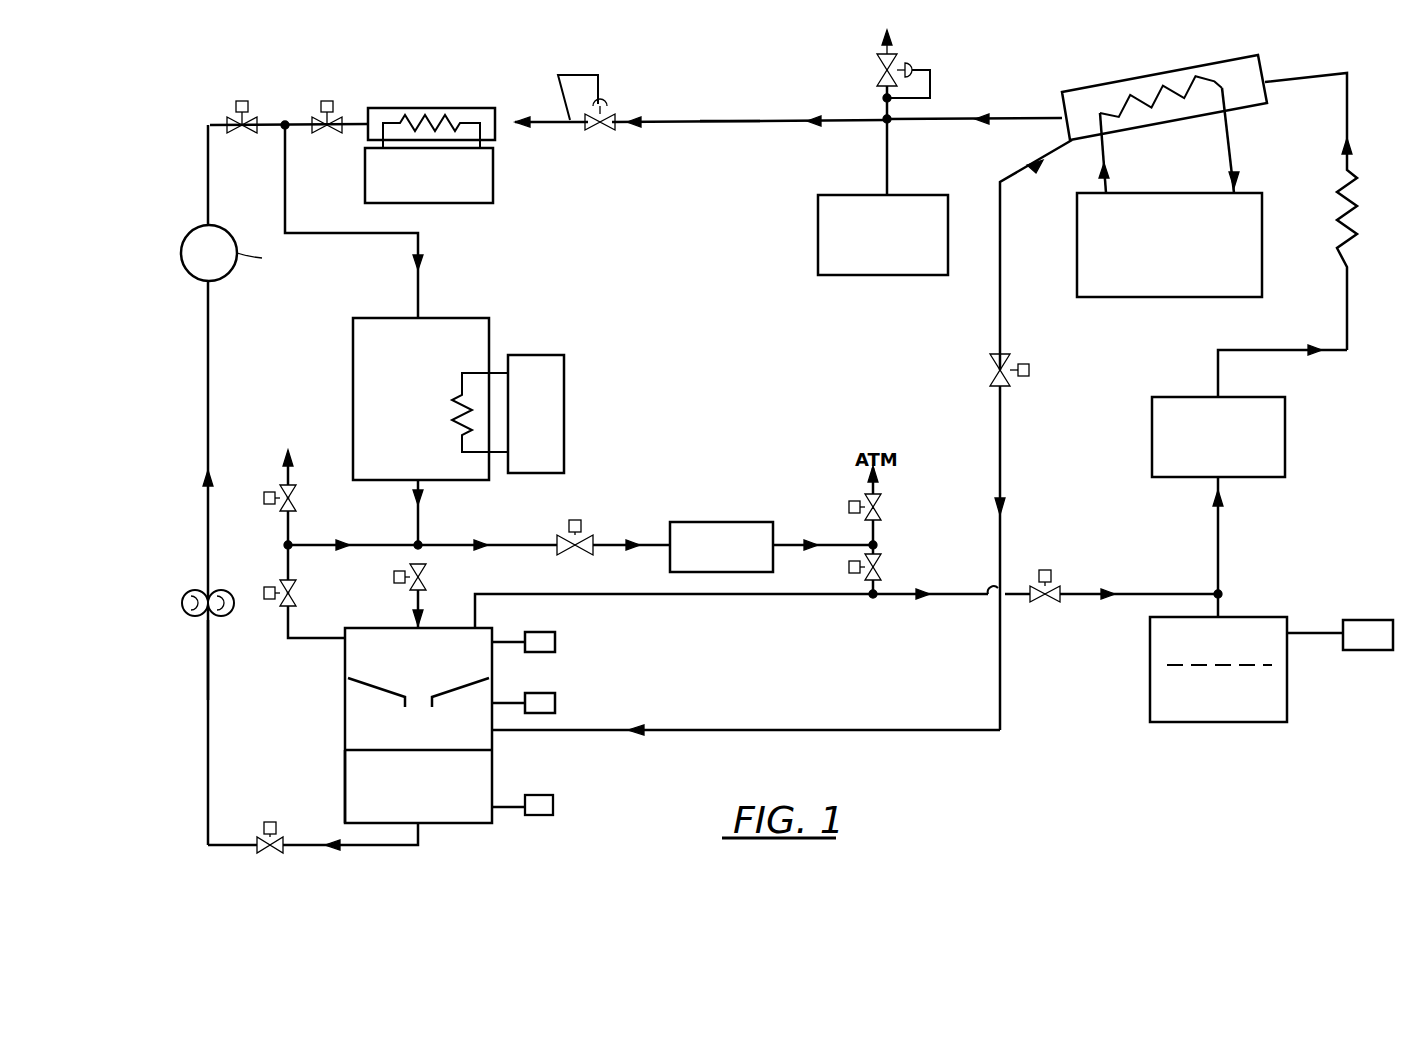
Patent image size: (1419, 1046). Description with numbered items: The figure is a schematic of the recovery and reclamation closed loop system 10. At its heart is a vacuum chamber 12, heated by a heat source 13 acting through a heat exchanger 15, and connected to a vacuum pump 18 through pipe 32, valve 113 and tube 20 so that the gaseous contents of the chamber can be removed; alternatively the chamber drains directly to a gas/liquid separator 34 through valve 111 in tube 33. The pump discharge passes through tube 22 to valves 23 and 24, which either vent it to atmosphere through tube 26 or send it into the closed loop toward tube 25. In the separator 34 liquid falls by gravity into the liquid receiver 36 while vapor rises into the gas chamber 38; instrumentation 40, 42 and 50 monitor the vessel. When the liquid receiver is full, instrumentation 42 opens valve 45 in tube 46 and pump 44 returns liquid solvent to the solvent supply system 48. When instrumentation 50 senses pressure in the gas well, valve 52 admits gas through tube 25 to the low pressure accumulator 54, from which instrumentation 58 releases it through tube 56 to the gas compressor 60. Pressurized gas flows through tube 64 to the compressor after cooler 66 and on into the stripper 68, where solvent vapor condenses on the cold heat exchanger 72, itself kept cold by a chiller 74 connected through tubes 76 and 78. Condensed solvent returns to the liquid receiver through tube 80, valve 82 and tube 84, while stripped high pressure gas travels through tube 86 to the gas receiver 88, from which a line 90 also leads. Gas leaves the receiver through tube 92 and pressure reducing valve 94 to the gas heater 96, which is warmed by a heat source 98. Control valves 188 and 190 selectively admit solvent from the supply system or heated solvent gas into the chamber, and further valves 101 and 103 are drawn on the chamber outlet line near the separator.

The recovery and reclamation closed loop system 10 is at (690, 297).
The vacuum chamber 12 is at (384, 399).
The heat source 13 is at (567, 403).
The heat exchanger 15 is at (453, 412).
The vacuum pump 18 is at (721, 532).
The tube 20 is at (631, 527).
The tube 22 is at (825, 521).
The valve 23 is at (895, 574).
The valve 24 is at (895, 524).
The tube 25 is at (737, 660).
The tube 26 is at (905, 484).
The pipe or tube 32 is at (447, 512).
The tube 33 is at (385, 609).
The gas/liquid separator 34 is at (380, 725).
The liquid receiver 36 is at (361, 786).
The gas chamber 38 is at (380, 672).
The instrumentation 40 is at (558, 695).
The instrumentation 42 is at (551, 788).
The pump 44 is at (221, 579).
The valve 45 is at (252, 828).
The tube 46 is at (235, 660).
The solvent supply system 48 is at (260, 254).
The instrumentation 50 is at (558, 636).
The valve 52 is at (1111, 572).
The low pressure accumulator 54 is at (1253, 669).
The tube 56 is at (1255, 547).
The instrumentation 58 is at (1340, 614).
The gas compressor 60 is at (1255, 437).
The tube 64 is at (1282, 351).
The compressor after cooler 66 is at (1338, 211).
The stripper 68 is at (1142, 84).
The heat exchanger 72 is at (1192, 71).
The chiller 74 is at (1198, 228).
The tube 76 is at (1139, 153).
The tube 78 is at (1270, 140).
The tube 80 is at (998, 255).
The valve 82 is at (1037, 357).
The tube 84 is at (1036, 558).
The tube 86 is at (974, 101).
The high pressure gas receiver 88 is at (845, 235).
The gas receiver line 90 is at (928, 157).
The tube 92 is at (730, 106).
The pressure reducing valve 94 is at (618, 98).
The gas heater 96 is at (410, 131).
The heat source 98 is at (919, 74).
The valve 101 is at (310, 591).
The valve 103 is at (318, 497).
The valve 111 is at (445, 576).
The valve 113 is at (462, 520).
The control valve 188 is at (221, 98).
The control valve 190 is at (296, 87).